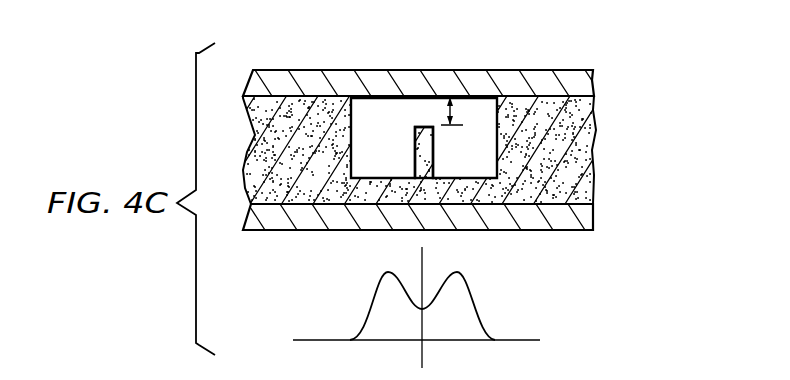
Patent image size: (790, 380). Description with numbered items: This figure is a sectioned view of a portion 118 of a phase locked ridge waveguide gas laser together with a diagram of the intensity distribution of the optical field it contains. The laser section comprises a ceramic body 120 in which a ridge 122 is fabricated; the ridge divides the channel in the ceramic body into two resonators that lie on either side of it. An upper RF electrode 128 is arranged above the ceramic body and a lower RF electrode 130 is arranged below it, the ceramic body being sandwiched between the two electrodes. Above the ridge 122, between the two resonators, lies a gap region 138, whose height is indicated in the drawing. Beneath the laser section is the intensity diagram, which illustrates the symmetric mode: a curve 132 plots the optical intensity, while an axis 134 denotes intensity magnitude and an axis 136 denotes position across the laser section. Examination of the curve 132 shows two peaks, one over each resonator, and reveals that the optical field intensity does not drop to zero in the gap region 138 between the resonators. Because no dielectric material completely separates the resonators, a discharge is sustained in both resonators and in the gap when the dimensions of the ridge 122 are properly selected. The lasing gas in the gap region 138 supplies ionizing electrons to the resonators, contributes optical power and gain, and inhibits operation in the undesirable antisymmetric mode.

The portion of a phase locked ridge waveguide gas laser 118 is at (430, 150).
The ceramic body 120 is at (410, 150).
The ridge 122 is at (415, 134).
The upper RF electrode 128 is at (487, 70).
The lower RF electrode 130 is at (553, 230).
The curve 132 is at (477, 302).
The axis 134 is at (427, 258).
The axis 136 is at (527, 338).
The gap region 138 is at (451, 110).